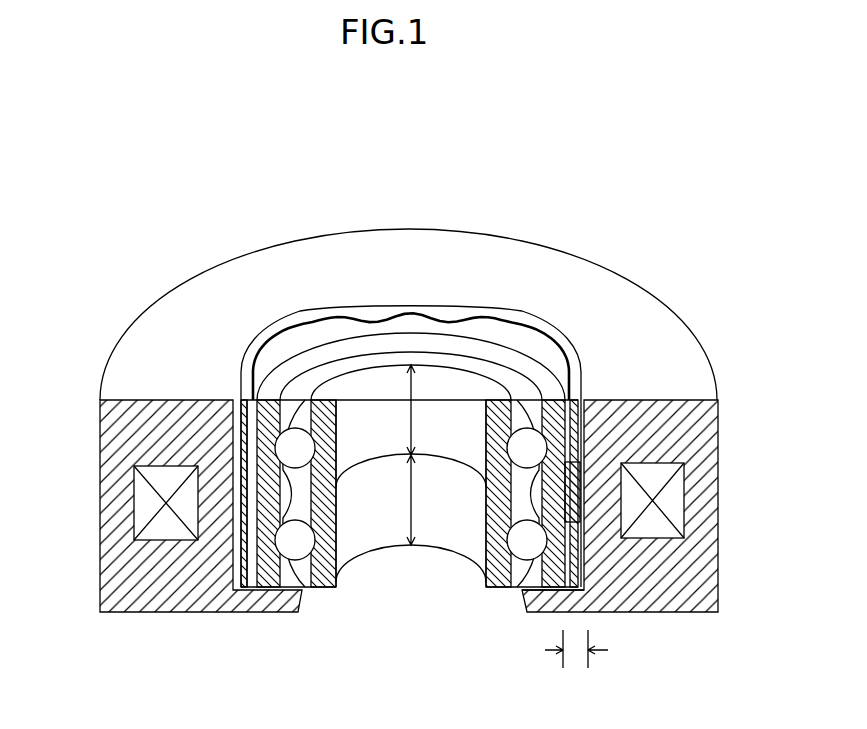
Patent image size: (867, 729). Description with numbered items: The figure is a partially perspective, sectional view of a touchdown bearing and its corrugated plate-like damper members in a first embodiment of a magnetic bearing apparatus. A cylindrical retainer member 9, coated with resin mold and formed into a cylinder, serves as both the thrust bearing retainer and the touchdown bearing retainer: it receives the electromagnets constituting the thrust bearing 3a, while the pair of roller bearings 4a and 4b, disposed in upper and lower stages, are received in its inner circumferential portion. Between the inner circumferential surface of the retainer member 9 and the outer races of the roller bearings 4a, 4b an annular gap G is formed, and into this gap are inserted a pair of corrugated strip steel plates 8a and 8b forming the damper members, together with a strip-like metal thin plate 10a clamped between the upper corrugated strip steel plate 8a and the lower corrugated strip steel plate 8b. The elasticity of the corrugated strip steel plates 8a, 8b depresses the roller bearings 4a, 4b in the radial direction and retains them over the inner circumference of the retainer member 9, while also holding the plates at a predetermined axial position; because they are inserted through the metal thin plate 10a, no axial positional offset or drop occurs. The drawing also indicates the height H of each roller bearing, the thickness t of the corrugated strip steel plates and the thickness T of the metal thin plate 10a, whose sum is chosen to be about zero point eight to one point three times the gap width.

The thrust bearing 3a is at (147, 495).
The first rotary bearing (upper roller bearing) 4a is at (299, 448).
The lower roller bearing 4b is at (300, 542).
The upper corrugated strip steel plate 8a is at (586, 421).
The lower corrugated strip steel plate 8b is at (588, 568).
The cylindrical retainer member 9 is at (597, 330).
The strip-like metal thin plate 10a is at (580, 496).
The annular gap G is at (515, 327).
The thickness of the corrugated strip steel plates t is at (255, 491).
The thickness of the metal thin plate T is at (240, 460).
The height of the roller bearing H is at (423, 455).